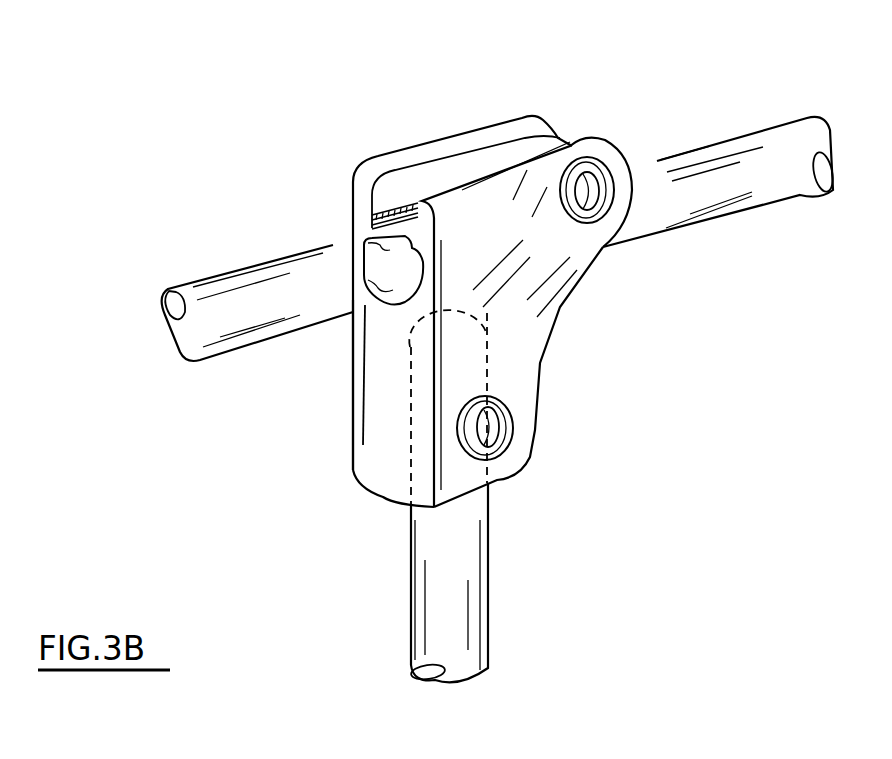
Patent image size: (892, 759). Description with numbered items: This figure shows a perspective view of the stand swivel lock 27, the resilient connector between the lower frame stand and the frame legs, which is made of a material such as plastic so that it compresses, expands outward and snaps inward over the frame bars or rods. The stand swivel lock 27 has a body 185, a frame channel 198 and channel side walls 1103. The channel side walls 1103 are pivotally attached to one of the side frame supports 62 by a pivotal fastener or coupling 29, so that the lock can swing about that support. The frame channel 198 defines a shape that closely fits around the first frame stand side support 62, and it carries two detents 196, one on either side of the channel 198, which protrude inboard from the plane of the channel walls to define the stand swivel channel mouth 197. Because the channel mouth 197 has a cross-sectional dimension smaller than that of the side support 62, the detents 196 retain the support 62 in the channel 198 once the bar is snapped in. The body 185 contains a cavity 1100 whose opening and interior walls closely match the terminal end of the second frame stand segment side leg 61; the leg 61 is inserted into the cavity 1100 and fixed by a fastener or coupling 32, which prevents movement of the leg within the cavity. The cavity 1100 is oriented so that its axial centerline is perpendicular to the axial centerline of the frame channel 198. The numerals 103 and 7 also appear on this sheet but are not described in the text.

The bracket body 103 is at (513, 200).
The side frame support 62 is at (755, 135).
The pivotal fastener or coupling 29 is at (590, 215).
The channel side walls 1103 is at (545, 288).
The body 185 is at (525, 358).
The fastener or coupling 32 is at (512, 405).
The second frame stand segment side leg 61 is at (488, 577).
The cavity 1100 is at (377, 487).
The stand swivel lock 27 is at (358, 163).
The frame channel 198 is at (372, 286).
The cross tube 7 is at (336, 305).
The stand swivel channel mouth 197 is at (373, 234).
The detents 196 is at (373, 243).